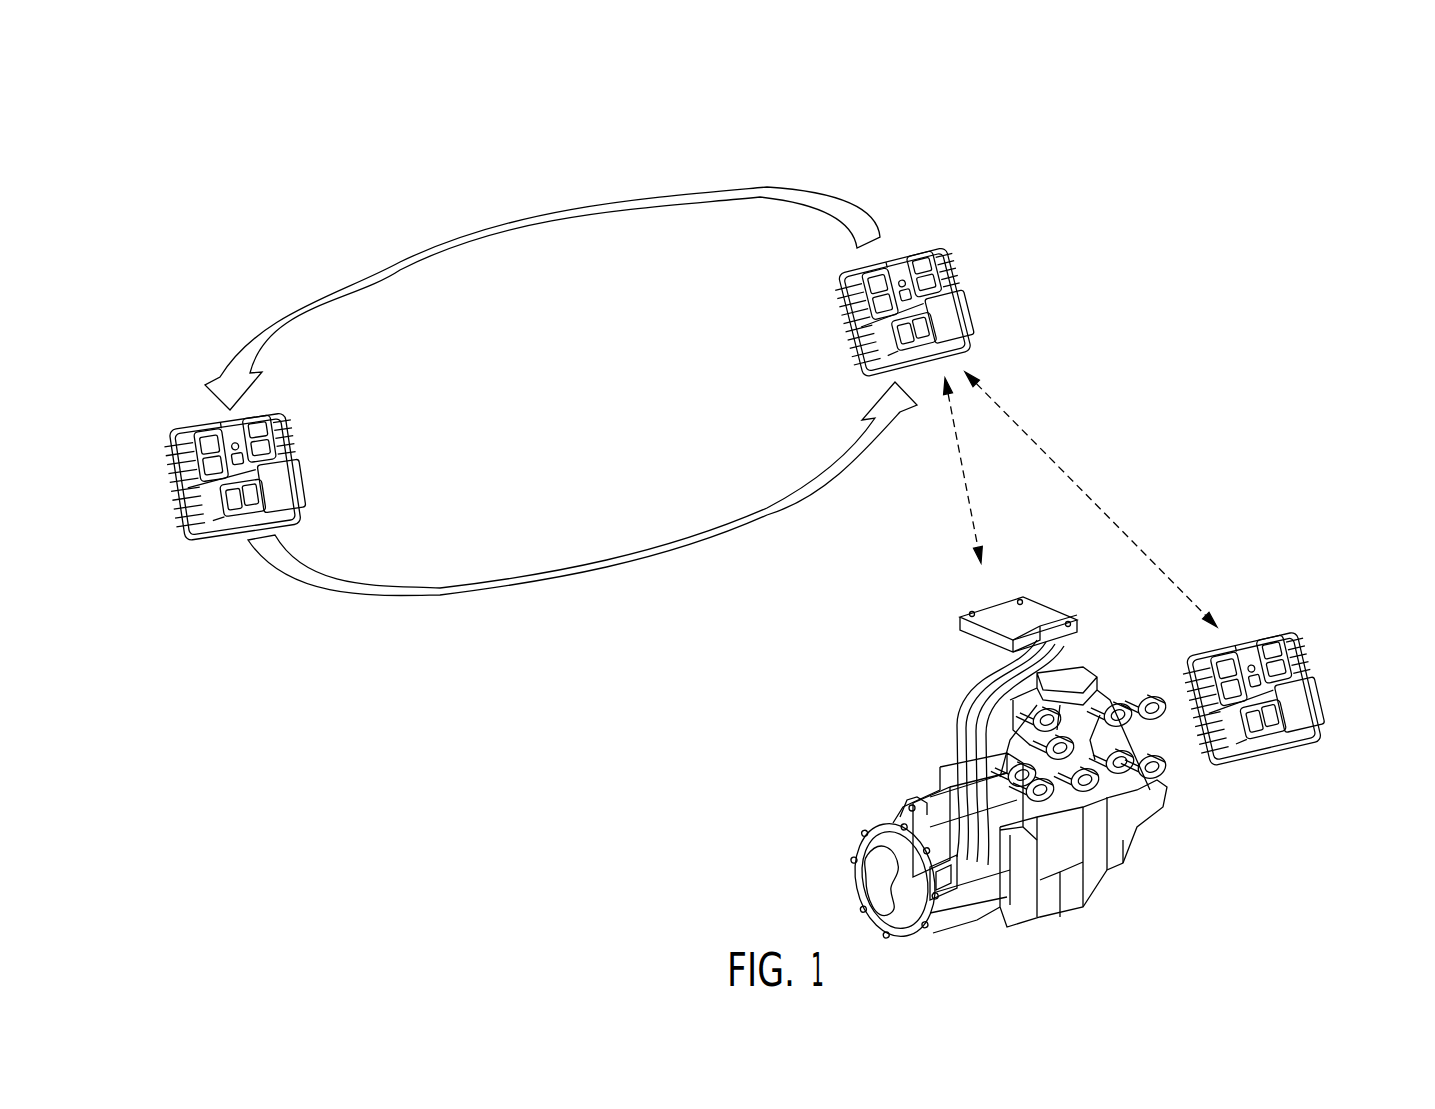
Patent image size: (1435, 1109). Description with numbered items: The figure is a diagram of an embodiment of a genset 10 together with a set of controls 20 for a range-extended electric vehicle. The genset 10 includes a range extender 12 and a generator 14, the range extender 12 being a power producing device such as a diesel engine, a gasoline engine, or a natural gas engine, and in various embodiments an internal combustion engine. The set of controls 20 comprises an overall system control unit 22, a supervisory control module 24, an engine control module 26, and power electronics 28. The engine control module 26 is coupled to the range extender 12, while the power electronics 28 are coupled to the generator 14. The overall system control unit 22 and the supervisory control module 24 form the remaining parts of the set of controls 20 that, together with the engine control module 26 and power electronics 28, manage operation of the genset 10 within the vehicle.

The genset 10 is at (846, 657).
The range extender 12 is at (1117, 858).
The generator 14 is at (892, 868).
The set of controls 20 is at (461, 159).
The overall system control unit 22 is at (175, 394).
The supervisory control module 24 is at (943, 217).
The engine control module (ECM) 26 is at (1320, 624).
The power electronics 28 is at (941, 590).